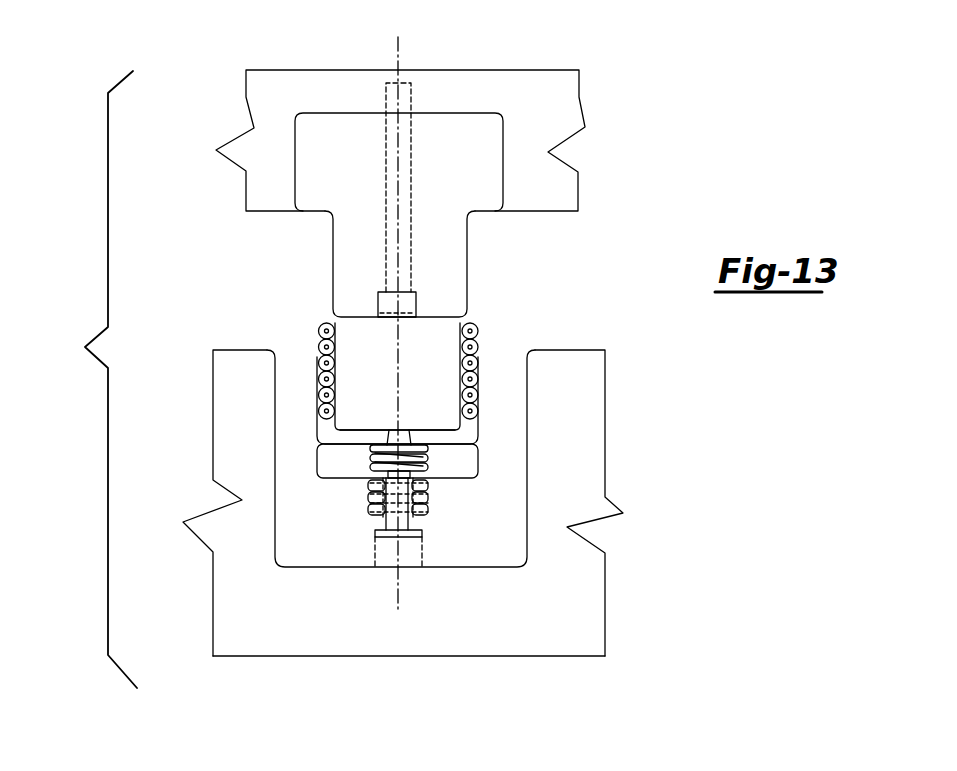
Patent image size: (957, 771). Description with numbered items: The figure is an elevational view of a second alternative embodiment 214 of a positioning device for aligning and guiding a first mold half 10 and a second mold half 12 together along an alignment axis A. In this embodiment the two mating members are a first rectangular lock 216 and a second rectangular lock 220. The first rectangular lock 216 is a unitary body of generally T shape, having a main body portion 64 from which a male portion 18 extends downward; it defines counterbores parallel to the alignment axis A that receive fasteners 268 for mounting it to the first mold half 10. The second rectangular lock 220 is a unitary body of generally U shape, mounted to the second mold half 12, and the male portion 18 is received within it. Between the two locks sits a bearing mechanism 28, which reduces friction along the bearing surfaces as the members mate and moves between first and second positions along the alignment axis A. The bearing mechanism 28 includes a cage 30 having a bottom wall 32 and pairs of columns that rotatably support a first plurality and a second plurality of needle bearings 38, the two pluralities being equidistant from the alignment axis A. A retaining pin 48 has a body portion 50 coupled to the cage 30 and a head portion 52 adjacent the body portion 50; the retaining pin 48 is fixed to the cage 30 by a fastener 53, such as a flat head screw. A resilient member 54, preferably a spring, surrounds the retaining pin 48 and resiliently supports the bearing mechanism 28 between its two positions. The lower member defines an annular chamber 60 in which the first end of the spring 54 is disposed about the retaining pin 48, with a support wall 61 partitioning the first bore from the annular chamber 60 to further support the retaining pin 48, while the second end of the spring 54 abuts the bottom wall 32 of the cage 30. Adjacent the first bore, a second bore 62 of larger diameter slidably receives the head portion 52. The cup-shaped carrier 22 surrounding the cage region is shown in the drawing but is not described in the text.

The alignment axis A is at (399, 33).
The first mold half 10 is at (575, 190).
The second mold half 12 is at (603, 398).
The male portion 18 is at (348, 277).
The cup member 22 is at (332, 466).
The bearing mechanism 28 is at (298, 402).
The cage 30 is at (488, 337).
The bottom wall 32 is at (370, 428).
The needle bearings 38 is at (320, 372).
The retaining pin 48 is at (372, 525).
The body portion 50 is at (405, 523).
The head portion 52 is at (410, 540).
The fastener 53 is at (405, 428).
The resilient member 54 is at (427, 468).
The annular chamber 60 is at (370, 490).
The support wall 61 is at (428, 497).
The second bore 62 is at (386, 560).
The main body portion 64 is at (393, 183).
The second alternative embodiment 214 is at (582, 262).
The first rectangular lock 216 is at (307, 125).
The second rectangular lock 220 is at (313, 553).
The fasteners 268 is at (411, 133).